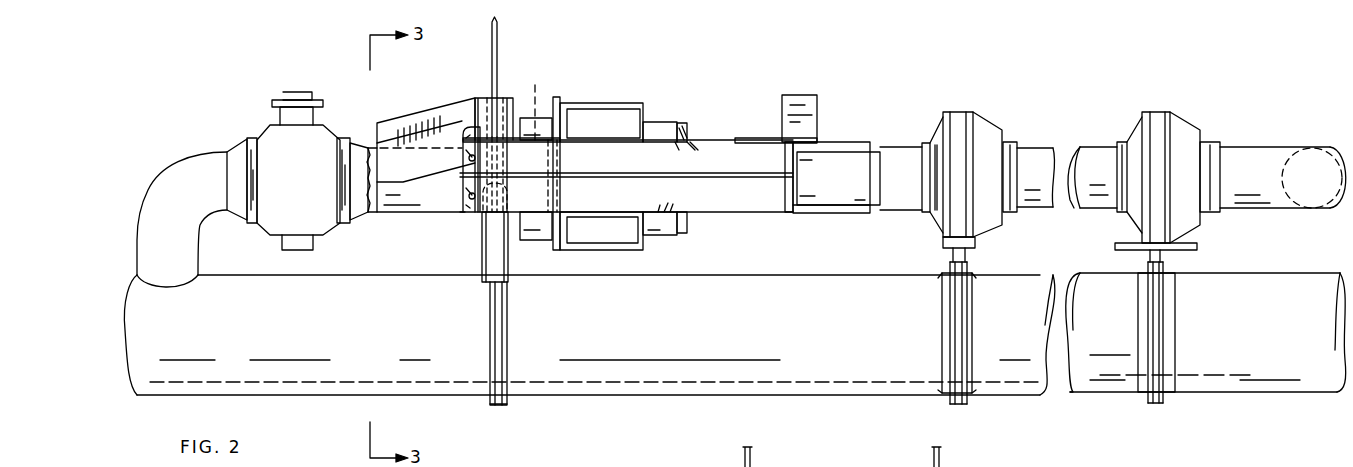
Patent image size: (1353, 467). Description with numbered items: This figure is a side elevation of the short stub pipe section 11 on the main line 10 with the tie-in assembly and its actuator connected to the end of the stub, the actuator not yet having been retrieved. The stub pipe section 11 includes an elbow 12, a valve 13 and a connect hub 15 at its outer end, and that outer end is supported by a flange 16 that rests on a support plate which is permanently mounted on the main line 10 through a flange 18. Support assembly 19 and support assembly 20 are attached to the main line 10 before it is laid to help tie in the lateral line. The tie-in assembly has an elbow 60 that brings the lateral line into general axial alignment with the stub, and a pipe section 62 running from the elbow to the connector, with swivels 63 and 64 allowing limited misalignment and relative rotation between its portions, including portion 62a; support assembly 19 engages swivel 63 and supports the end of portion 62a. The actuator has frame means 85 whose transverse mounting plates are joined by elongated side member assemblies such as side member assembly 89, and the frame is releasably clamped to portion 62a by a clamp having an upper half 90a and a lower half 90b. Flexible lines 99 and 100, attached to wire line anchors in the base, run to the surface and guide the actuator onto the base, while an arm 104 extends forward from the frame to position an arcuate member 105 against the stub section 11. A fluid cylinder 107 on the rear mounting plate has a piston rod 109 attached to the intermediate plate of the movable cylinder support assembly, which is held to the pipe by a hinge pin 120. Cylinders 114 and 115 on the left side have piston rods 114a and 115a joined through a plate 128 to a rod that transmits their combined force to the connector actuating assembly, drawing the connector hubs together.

The main line 10 is at (713, 390).
The stub pipe section 11 is at (384, 222).
The elbow 12 is at (184, 162).
The valve 13 is at (267, 128).
The connect hub 15 is at (544, 136).
The flange 16 is at (488, 135).
The flange 18 is at (503, 405).
The support assembly 19 is at (966, 400).
The support assembly 20 is at (1157, 403).
The elbow 60 is at (1318, 147).
The pipe section 62 is at (1081, 140).
The portion of pipe section 62a is at (915, 142).
The swivel 63 is at (968, 112).
The swivel 64 is at (1158, 112).
The frame means 85 is at (783, 218).
The side member assembly 89 is at (724, 205).
The upper half of clamp 90a is at (849, 142).
The lower half of clamp 90b is at (853, 215).
The flexible line 99 is at (754, 455).
The flexible line 100 is at (500, 42).
The arm 104 is at (428, 112).
The arcuate member 105 is at (849, 460).
The fluid cylinder 107 is at (853, 185).
The piston rod 109 is at (962, 457).
The cylinder 114 is at (618, 236).
The piston rod 114a is at (660, 234).
The cylinder 115 is at (598, 116).
The piston rod 115a is at (663, 122).
The hinge pin 120 is at (530, 242).
The plate 128 is at (684, 126).